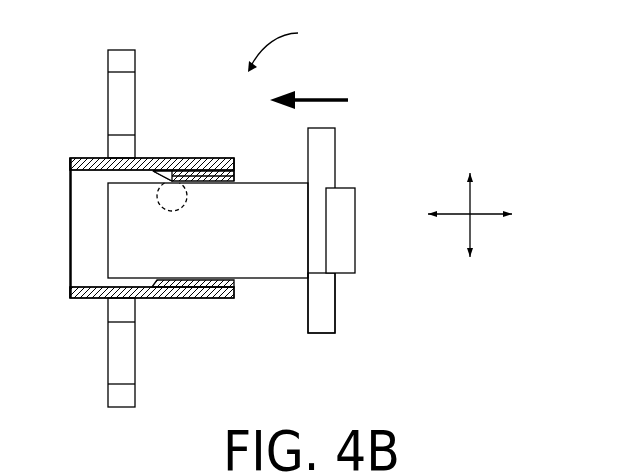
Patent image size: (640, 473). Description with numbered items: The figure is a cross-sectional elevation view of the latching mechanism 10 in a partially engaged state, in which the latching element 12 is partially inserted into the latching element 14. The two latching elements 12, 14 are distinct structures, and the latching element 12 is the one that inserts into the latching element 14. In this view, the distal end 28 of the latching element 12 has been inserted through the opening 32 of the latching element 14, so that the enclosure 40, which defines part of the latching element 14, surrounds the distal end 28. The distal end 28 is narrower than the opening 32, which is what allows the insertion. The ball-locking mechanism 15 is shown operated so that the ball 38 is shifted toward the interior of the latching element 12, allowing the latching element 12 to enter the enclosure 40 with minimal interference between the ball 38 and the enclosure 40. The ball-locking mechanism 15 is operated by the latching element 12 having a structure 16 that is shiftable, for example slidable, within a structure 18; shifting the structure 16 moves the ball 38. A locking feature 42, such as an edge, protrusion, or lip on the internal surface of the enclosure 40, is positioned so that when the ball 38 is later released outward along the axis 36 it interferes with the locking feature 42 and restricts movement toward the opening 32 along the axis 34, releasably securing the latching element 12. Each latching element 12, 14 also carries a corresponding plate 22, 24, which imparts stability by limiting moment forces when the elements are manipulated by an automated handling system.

The latching mechanism 10 is at (288, 47).
The latching element 12 is at (272, 273).
The latching element 14 is at (143, 158).
The ball-locking mechanism 15 is at (337, 222).
The structure 16 is at (357, 205).
The structure 18 is at (320, 142).
The plate 22 is at (115, 398).
The plate 24 is at (335, 318).
The distal end 28 is at (107, 232).
The opening 32 is at (234, 283).
The axis 34 is at (486, 211).
The axis 36 is at (468, 197).
The ball 38 is at (181, 178).
The enclosure 40 is at (170, 298).
The locking feature 42 is at (166, 174).